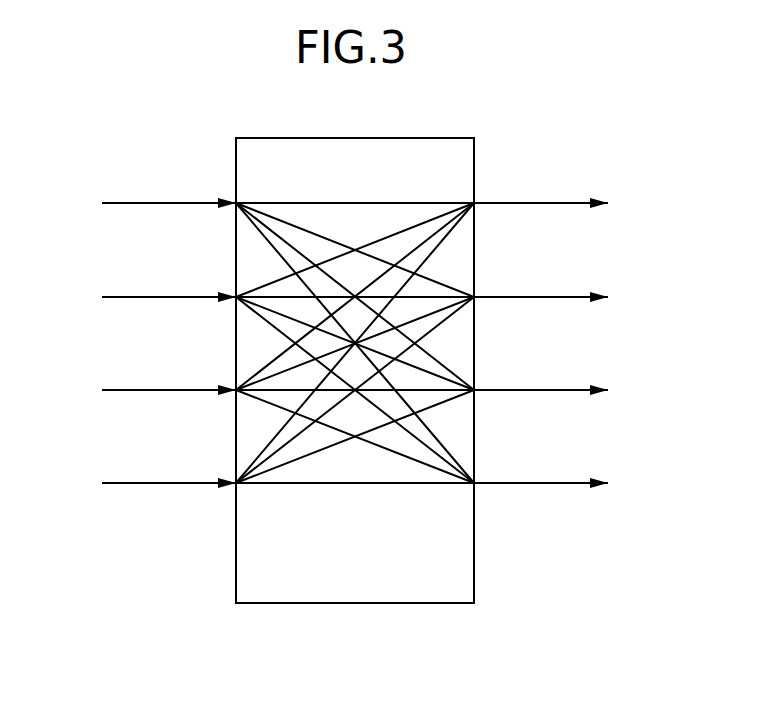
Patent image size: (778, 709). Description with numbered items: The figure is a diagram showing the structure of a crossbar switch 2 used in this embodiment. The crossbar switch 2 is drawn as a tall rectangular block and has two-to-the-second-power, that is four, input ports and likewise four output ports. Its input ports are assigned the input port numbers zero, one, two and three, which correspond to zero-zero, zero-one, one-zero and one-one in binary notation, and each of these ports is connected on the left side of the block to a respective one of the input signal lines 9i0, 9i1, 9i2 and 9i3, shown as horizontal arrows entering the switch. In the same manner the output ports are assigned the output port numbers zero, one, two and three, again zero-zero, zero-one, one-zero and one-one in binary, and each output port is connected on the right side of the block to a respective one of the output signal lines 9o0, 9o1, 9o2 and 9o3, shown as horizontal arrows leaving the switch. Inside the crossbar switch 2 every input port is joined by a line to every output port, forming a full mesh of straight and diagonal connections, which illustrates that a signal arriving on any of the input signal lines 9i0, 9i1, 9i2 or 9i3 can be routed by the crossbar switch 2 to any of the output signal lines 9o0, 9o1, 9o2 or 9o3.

The crossbar switch 2 is at (358, 603).
The input signal line 9i0 is at (128, 203).
The input signal line 9i1 is at (128, 297).
The input signal line 9i2 is at (128, 390).
The input signal line 9i3 is at (128, 483).
The output signal line 9o0 is at (575, 203).
The output signal line 9o1 is at (575, 297).
The output signal line 9o2 is at (575, 390).
The output signal line 9o3 is at (575, 483).